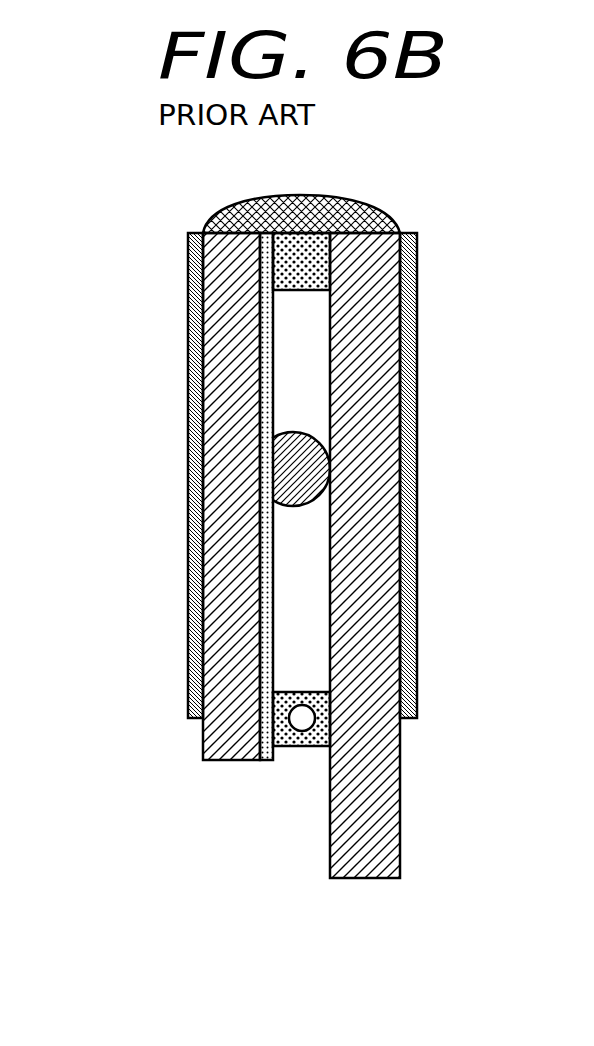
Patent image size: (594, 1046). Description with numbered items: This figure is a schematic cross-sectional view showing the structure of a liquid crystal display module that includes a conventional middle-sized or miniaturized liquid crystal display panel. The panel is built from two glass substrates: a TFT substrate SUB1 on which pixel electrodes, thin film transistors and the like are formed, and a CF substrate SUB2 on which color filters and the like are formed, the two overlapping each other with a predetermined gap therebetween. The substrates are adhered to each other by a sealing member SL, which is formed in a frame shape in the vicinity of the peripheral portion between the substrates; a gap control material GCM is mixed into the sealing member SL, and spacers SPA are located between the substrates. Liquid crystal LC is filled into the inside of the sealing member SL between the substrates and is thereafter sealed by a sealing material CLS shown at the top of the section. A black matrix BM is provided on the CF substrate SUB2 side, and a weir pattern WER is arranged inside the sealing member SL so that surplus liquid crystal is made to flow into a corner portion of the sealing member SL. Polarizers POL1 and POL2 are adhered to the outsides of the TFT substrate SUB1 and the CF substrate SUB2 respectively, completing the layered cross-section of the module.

The sealing material CLS is at (223, 213).
The black matrix BM is at (257, 302).
The polarizer POL1 is at (415, 283).
The polarizer POL2 is at (187, 607).
The TFT substrate SUB1 is at (347, 830).
The CF substrate SUB2 is at (210, 520).
The spacer SPA is at (307, 443).
The weir pattern WER is at (257, 452).
The liquid crystal LC is at (307, 545).
The sealing member SL is at (273, 734).
The gap control material GCM is at (312, 727).